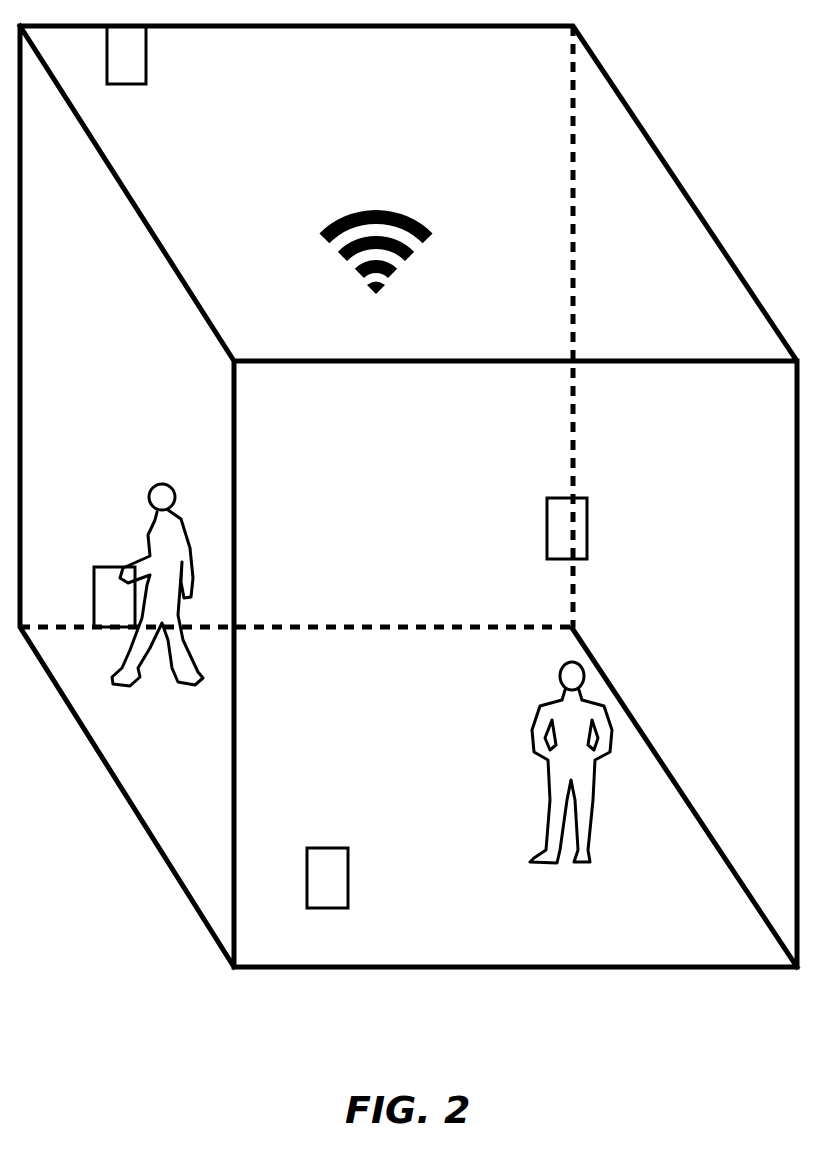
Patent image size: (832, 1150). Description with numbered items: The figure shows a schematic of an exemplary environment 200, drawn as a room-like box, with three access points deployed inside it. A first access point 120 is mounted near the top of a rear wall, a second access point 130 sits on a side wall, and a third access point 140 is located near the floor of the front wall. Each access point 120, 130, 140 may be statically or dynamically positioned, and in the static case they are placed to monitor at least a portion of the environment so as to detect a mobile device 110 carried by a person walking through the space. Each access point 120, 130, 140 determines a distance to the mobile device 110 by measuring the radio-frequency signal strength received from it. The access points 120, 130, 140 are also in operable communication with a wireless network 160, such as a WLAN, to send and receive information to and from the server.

The environment 200 is at (617, 82).
The mobile device 110 is at (107, 567).
The first access point 120 is at (127, 84).
The second access point 130 is at (586, 557).
The third access point 140 is at (340, 908).
The wireless network 160 is at (375, 210).